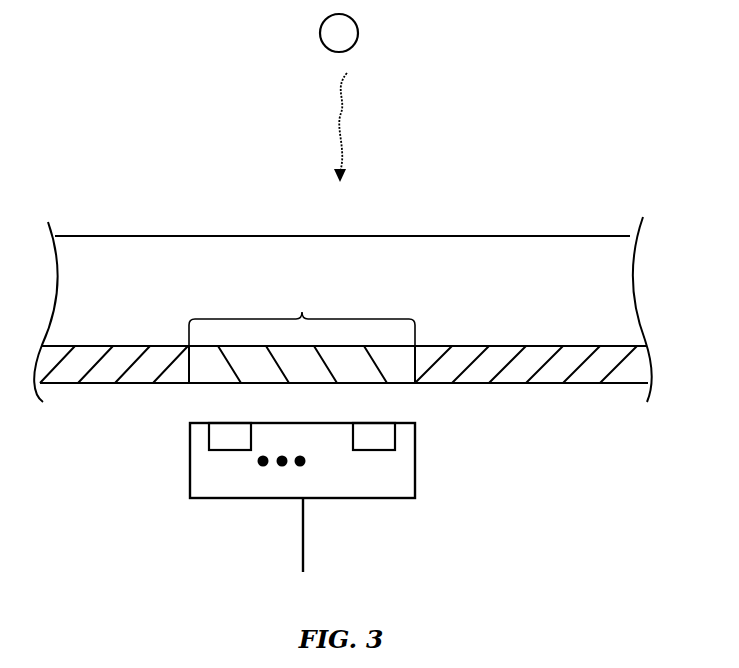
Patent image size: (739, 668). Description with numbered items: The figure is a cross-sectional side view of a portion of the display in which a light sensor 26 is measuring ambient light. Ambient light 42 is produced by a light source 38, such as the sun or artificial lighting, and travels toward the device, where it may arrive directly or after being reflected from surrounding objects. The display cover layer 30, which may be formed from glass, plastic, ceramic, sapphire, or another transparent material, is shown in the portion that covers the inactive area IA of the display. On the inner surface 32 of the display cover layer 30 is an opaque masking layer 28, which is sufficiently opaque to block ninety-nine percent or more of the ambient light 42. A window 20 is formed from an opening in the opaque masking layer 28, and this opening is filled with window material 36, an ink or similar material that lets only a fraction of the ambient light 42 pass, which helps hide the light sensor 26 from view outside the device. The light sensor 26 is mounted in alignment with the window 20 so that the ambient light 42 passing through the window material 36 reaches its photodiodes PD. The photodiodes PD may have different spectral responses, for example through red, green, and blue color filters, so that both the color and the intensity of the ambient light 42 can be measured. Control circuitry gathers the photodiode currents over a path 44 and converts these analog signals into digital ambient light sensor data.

The light source 38 is at (359, 33).
The ambient light 42 is at (345, 115).
The inactive area IA is at (489, 161).
The display cover layer 30 is at (565, 245).
The inner surface 32 is at (497, 349).
The opaque masking layer 28 is at (107, 372).
The window material 36 is at (199, 375).
The window 20 is at (302, 316).
The light sensor 26 is at (404, 516).
The photodiodes PD is at (228, 440).
The path 44 is at (305, 535).